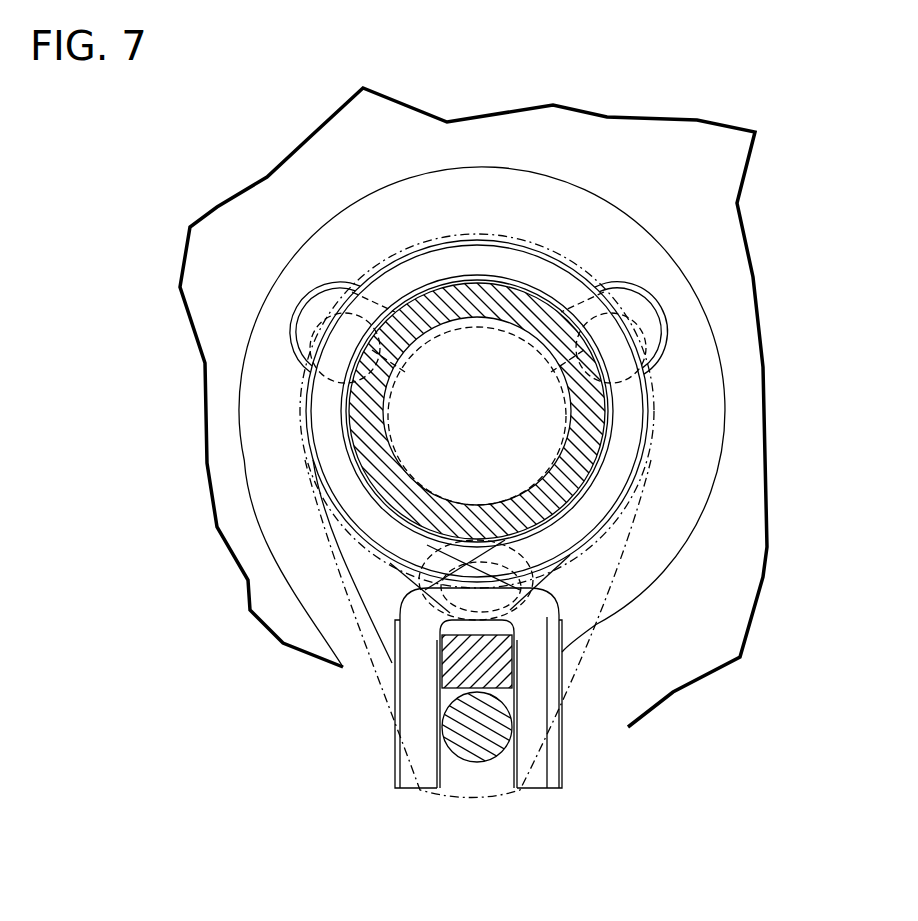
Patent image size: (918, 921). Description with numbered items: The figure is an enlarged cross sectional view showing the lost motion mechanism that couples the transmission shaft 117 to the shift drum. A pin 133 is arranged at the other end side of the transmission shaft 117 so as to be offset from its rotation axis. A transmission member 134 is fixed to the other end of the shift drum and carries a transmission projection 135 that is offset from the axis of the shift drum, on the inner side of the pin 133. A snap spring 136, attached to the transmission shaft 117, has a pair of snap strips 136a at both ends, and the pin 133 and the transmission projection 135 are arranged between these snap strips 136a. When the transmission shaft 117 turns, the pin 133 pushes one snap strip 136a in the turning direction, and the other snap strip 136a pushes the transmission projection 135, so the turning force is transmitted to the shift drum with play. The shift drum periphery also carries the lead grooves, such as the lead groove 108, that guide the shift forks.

The second lead groove 108 is at (393, 686).
The transmission shaft 117 is at (617, 550).
The pin 133 is at (470, 753).
The transmission member 134 is at (693, 455).
The transmission projection 135 is at (493, 665).
The snap spring 136 is at (550, 277).
The snap strips 136a is at (420, 782).